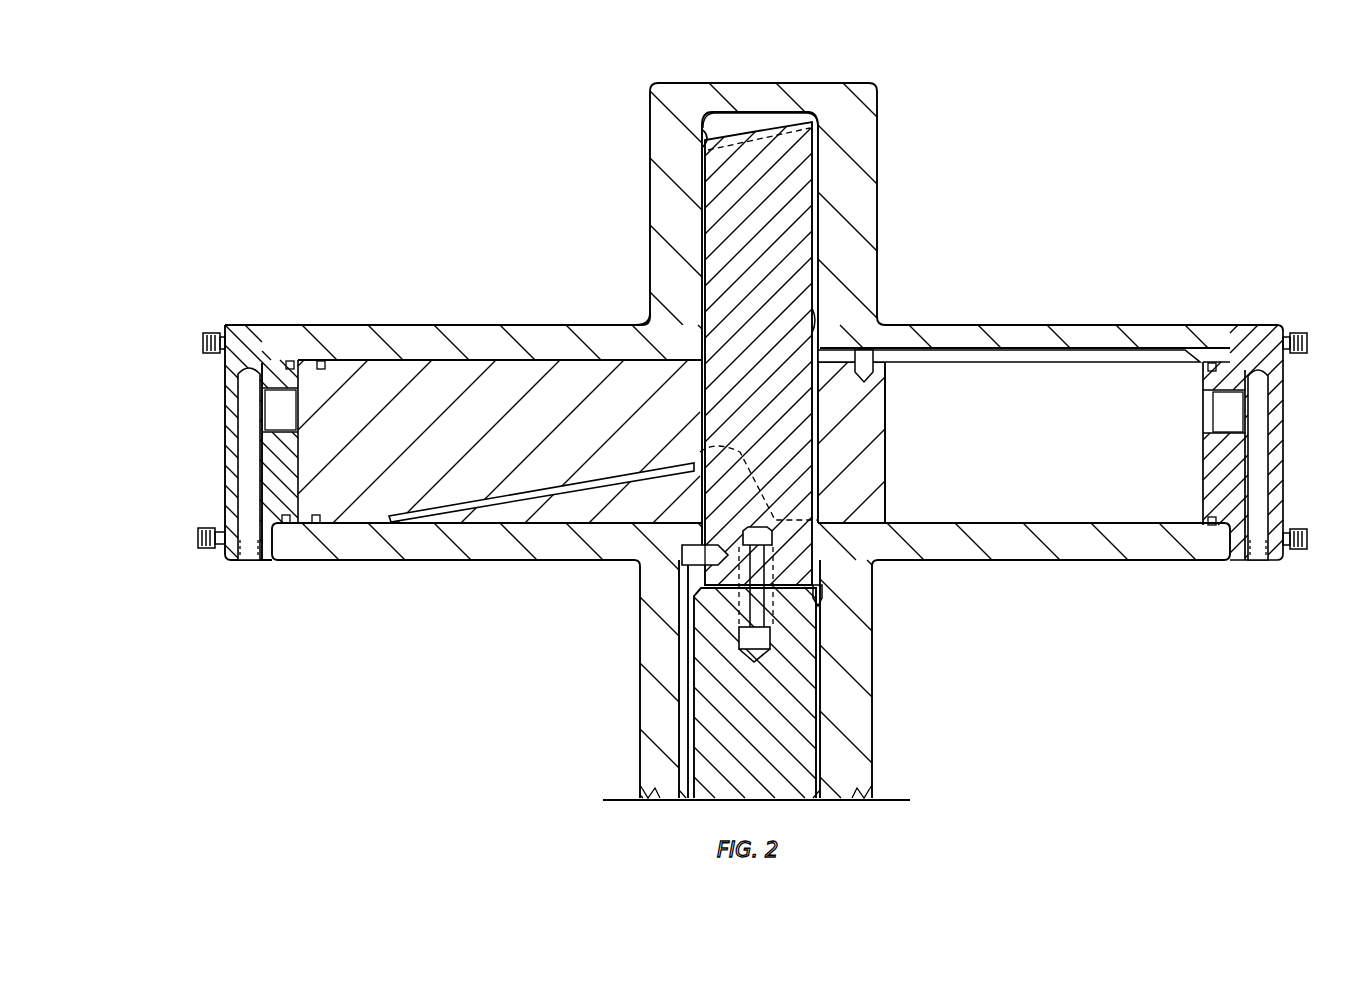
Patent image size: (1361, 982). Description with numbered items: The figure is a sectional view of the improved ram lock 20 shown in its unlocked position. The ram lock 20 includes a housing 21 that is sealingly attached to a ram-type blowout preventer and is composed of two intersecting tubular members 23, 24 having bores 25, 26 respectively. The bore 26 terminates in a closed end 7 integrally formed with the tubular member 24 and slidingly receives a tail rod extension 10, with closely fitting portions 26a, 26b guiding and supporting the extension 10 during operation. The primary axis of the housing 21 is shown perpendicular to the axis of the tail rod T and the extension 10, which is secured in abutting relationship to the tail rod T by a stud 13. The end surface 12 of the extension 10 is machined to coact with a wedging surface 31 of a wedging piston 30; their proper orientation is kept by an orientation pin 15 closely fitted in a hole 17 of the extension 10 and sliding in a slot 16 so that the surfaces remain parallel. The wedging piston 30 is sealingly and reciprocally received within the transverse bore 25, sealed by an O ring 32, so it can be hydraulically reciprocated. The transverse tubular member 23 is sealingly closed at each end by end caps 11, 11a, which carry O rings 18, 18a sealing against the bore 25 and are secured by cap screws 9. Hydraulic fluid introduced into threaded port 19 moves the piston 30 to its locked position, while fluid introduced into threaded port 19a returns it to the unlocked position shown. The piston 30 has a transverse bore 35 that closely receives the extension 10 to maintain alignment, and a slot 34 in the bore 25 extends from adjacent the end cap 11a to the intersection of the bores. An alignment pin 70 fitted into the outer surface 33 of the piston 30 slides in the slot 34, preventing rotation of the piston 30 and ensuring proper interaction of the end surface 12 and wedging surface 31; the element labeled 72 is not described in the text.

The closed end 7 is at (750, 424).
The end surface 12 is at (803, 112).
The bore 26 is at (704, 146).
The tubular member 24 is at (868, 135).
The tail rod extension 10 is at (761, 371).
The closely fitting portion 26a is at (815, 331).
The housing 21 is at (636, 316).
The alignment pin 70 is at (873, 350).
The hole 72 is at (937, 346).
The O ring 18 is at (306, 347).
The cap screws 9 is at (203, 342).
The end cap 11 is at (215, 463).
The O ring 18a is at (1182, 346).
The end cap 11a is at (1274, 465).
The transverse bore 35 is at (822, 440).
The slot 34 is at (1098, 353).
The threaded port 19 is at (248, 560).
The O ring 32 is at (328, 526).
The wedging piston 30 is at (458, 502).
The wedging surface 31 is at (505, 505).
The tubular member 23 is at (549, 565).
The orientation pin 15 is at (683, 556).
The hole 17 is at (746, 574).
The ram lock 20 is at (499, 514).
The tail rod T is at (696, 692).
The slot 16 is at (690, 742).
The closely fitting portion 26b is at (822, 594).
The stud 13 is at (752, 611).
The outer surface 33 is at (870, 540).
The bore 25 is at (1100, 528).
The threaded port 19a is at (1262, 561).